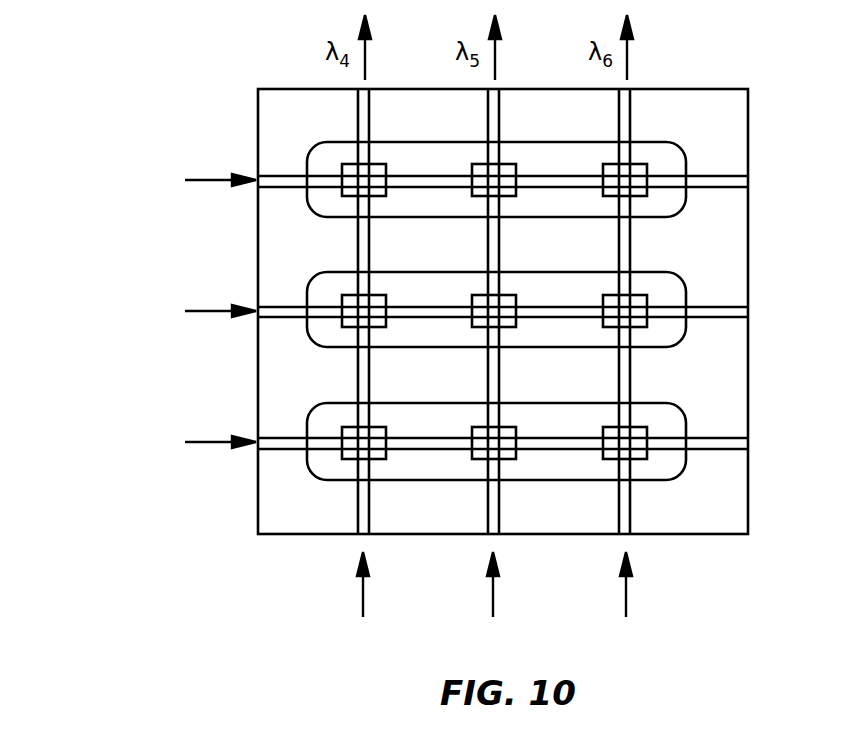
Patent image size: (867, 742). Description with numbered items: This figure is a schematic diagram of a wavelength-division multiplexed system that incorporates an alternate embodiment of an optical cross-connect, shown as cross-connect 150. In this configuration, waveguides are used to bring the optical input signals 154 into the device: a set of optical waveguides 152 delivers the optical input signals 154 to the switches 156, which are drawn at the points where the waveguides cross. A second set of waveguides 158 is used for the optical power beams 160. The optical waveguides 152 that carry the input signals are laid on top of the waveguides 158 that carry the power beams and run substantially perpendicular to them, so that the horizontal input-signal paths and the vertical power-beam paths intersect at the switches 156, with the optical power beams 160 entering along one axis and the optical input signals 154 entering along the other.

The cross-connect 150 is at (748, 90).
The optical waveguides 152 is at (712, 175).
The optical input signals 154 is at (205, 182).
The switches 156 is at (357, 163).
The waveguides 158 is at (625, 522).
The optical power beams 160 is at (362, 590).